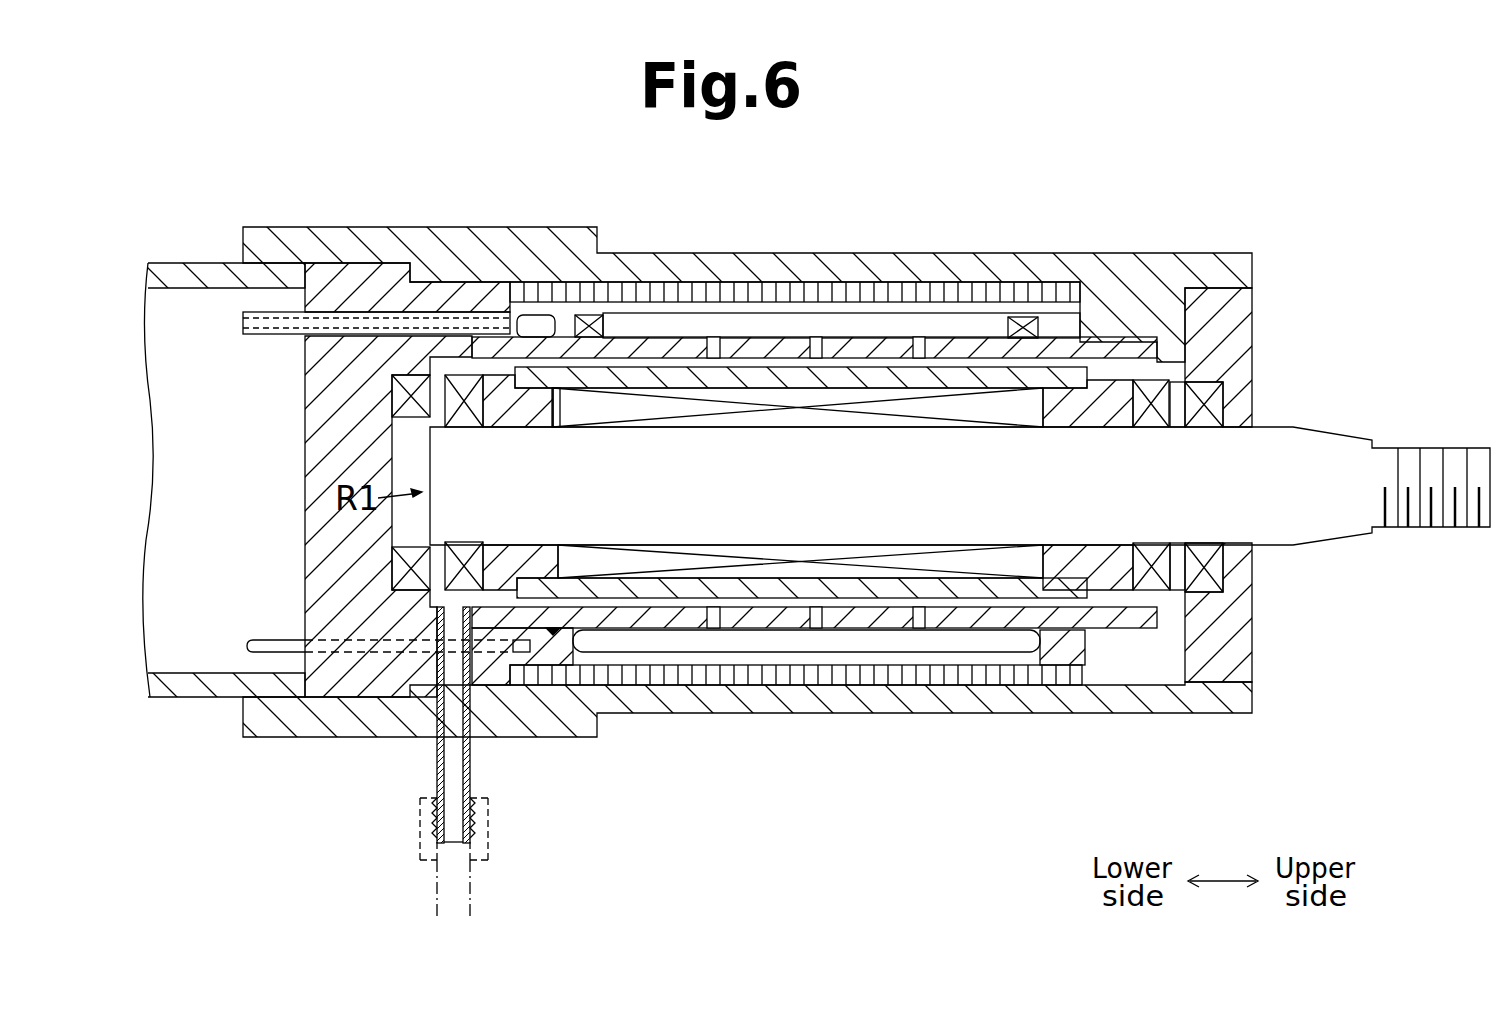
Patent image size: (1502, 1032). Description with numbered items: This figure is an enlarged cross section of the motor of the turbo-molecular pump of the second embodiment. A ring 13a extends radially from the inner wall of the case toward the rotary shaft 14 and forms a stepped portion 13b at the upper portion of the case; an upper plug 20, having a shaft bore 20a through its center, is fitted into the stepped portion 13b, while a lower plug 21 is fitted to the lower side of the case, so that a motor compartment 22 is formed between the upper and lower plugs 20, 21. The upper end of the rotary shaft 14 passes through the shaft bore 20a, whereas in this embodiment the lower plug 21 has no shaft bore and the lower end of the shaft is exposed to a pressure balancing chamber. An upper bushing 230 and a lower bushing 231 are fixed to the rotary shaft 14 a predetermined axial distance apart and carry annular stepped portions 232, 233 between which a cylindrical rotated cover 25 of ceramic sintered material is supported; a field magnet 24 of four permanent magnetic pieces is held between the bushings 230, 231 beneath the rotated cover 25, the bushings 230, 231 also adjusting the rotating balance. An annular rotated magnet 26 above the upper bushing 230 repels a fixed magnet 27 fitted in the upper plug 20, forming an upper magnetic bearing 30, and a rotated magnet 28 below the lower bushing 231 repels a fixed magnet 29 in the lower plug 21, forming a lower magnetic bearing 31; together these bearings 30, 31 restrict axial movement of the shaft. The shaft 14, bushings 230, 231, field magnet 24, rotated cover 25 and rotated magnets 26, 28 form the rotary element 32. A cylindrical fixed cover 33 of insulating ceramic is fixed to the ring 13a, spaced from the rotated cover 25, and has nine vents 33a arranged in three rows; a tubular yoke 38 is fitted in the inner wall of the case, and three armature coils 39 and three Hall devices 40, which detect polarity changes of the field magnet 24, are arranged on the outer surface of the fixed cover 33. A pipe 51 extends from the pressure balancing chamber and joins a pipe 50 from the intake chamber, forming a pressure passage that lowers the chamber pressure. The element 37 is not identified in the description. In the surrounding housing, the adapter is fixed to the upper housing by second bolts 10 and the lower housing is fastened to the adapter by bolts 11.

The second bolt 10 is at (1213, 250).
The bolt 11 is at (1134, 252).
The ring 13a is at (1177, 655).
The stepped portion 13b is at (1226, 665).
The rotary shaft 14 is at (1340, 432).
The upper plug 20 is at (1243, 656).
The shaft bore 20a is at (1250, 548).
The lower plug 21 is at (403, 698).
The motor compartment 22 is at (1057, 645).
The field magnet 24 is at (814, 427).
The rotated cover 25 is at (742, 388).
The rotated magnet 26 is at (1158, 378).
The fixed magnet 27 is at (1214, 382).
The rotated magnet 28 is at (462, 418).
The fixed magnet 29 is at (398, 393).
The upper magnetic bearing 30 is at (1312, 318).
The lower magnetic bearing 31 is at (241, 380).
The rotary element 32 is at (510, 592).
The fixed cover 33 is at (1047, 333).
The vent 33a is at (712, 336).
The lead plate 37 is at (265, 338).
The tubular yoke 38 is at (677, 285).
The armature coil 39 is at (860, 334).
The Hall device 40 is at (538, 314).
The pipe 50 is at (472, 880).
The pipe 51 is at (472, 762).
The upper bushing 230 is at (1088, 428).
The lower bushing 231 is at (516, 425).
The annular stepped portion 232 is at (1055, 380).
The annular stepped portion 233 is at (556, 388).